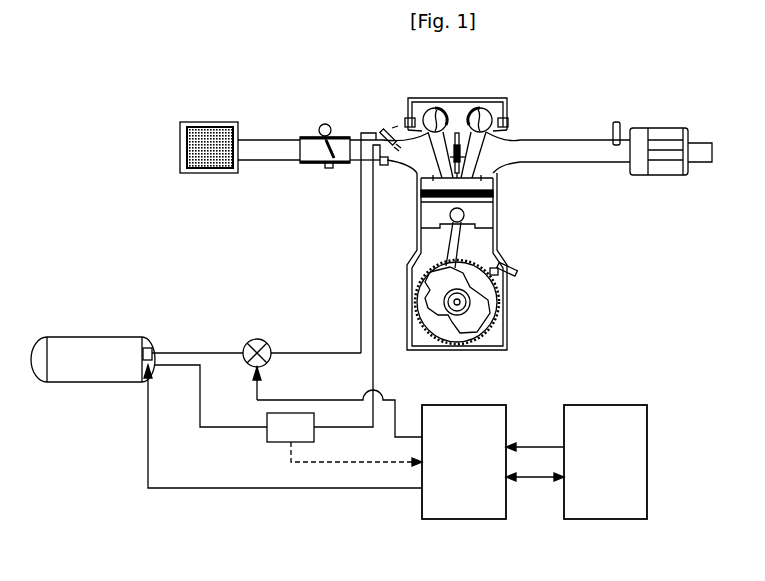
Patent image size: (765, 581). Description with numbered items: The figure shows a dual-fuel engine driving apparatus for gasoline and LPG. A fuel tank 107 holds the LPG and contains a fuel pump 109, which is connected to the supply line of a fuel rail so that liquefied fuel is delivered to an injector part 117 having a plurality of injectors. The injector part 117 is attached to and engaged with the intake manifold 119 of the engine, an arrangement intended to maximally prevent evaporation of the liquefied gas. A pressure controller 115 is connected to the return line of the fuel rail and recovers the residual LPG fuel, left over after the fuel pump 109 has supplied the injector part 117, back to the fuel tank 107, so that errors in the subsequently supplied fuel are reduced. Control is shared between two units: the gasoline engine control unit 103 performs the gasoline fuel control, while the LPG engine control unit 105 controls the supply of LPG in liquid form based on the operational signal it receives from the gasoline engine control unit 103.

The gasoline engine control unit 103 is at (608, 405).
The LPG engine control unit 105 is at (466, 405).
The fuel tank 107 is at (97, 346).
The fuel pump 109 is at (154, 346).
The pressure controller 115 is at (267, 438).
The injector part 117 is at (382, 128).
The intake manifold 119 is at (388, 168).